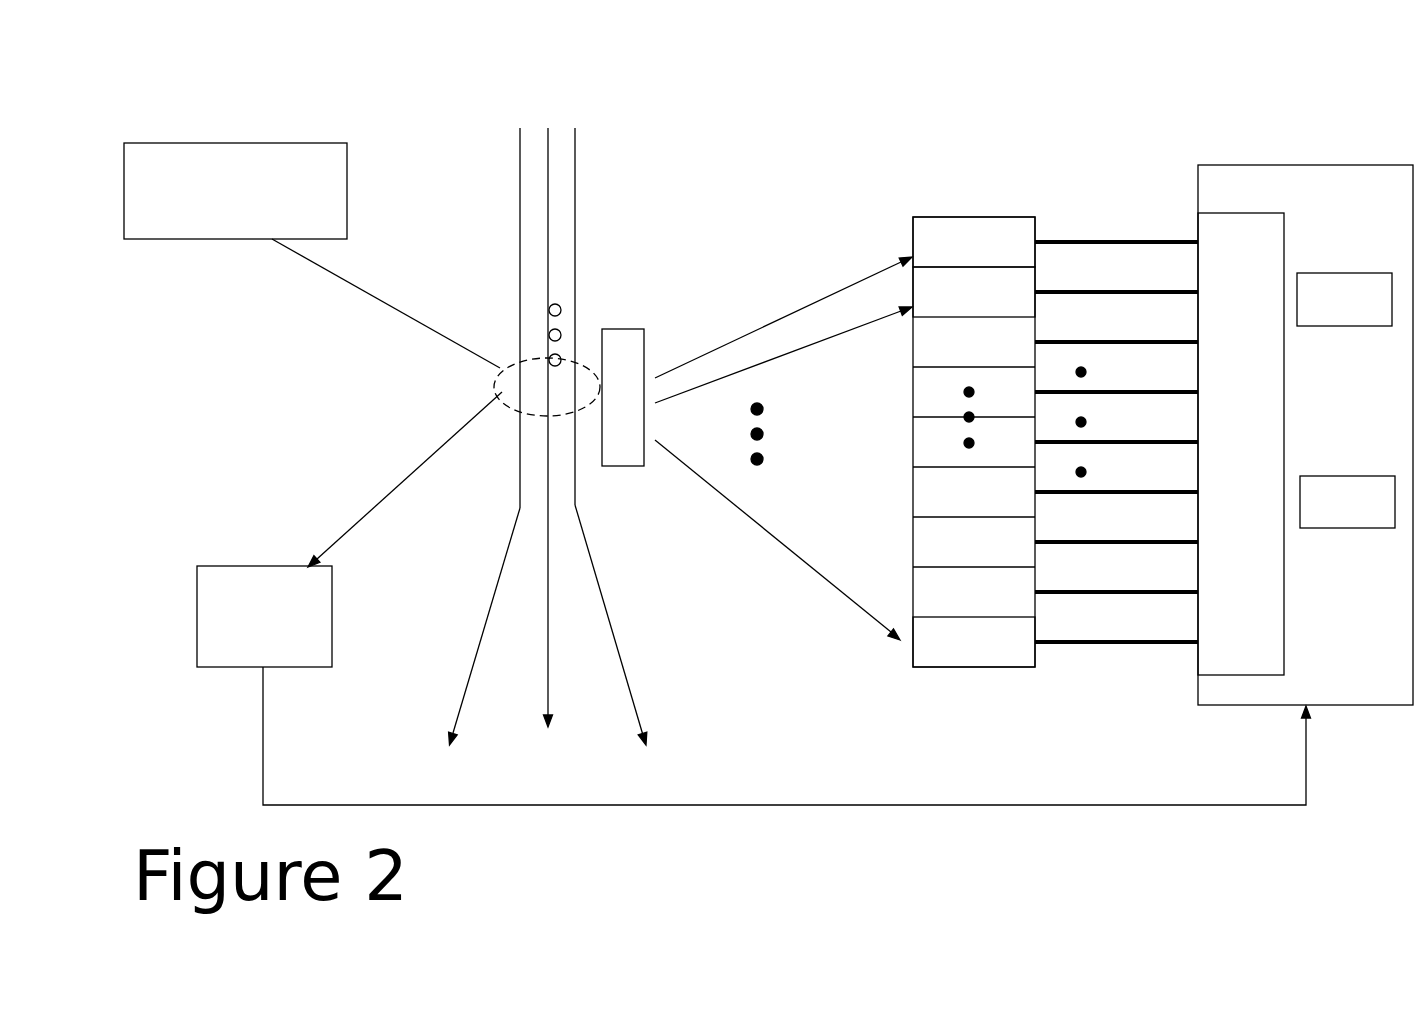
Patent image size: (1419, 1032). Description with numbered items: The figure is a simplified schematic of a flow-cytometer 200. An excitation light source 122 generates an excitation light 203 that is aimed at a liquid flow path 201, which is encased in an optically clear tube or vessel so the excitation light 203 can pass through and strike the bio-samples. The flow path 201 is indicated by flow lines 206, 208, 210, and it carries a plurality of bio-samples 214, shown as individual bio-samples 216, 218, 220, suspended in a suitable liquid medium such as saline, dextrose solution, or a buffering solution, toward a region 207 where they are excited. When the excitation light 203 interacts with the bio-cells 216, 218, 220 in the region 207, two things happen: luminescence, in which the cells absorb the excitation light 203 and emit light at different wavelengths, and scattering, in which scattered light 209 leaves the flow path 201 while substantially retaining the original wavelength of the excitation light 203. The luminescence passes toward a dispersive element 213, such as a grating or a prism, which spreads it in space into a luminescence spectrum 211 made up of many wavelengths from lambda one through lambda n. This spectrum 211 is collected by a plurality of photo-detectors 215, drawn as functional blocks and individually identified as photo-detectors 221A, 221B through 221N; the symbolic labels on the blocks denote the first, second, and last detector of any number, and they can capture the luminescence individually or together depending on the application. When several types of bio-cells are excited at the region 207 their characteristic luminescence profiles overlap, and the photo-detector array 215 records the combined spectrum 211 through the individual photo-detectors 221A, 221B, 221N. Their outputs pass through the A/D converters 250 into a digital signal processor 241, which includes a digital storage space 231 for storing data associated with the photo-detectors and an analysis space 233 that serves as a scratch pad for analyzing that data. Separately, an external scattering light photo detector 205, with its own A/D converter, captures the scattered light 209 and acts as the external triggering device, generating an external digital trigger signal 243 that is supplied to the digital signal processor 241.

The flow-cytometer 200 is at (1169, 87).
The excitation light source 122 is at (347, 143).
The liquid flow path 201 is at (548, 89).
The excitation light 203 is at (308, 263).
The scattering light photo detector 205 is at (197, 566).
The flow line 206 is at (453, 720).
The region 207 is at (496, 370).
The flow line 208 is at (545, 660).
The scattered light 209 is at (394, 491).
The flow line 210 is at (622, 667).
The luminescence spectrum 211 is at (765, 265).
The dispersive element 213 is at (623, 466).
The plurality of bio-samples 214 is at (502, 294).
The plurality of photo-detectors 215 is at (1014, 422).
The bio-sample 216 is at (560, 306).
The bio-sample 218 is at (560, 331).
The bio-sample 220 is at (560, 356).
The photo-detector 221A is at (1037, 217).
The photo-detector 221B is at (1050, 263).
The photo-detector 221N is at (1035, 667).
The digital storage space 231 is at (1344, 299).
The analysis space 233 is at (1347, 502).
The digital signal processor 241 is at (1224, 410).
The external digital trigger signal 243 is at (812, 805).
The A/D converters 250 is at (1284, 213).